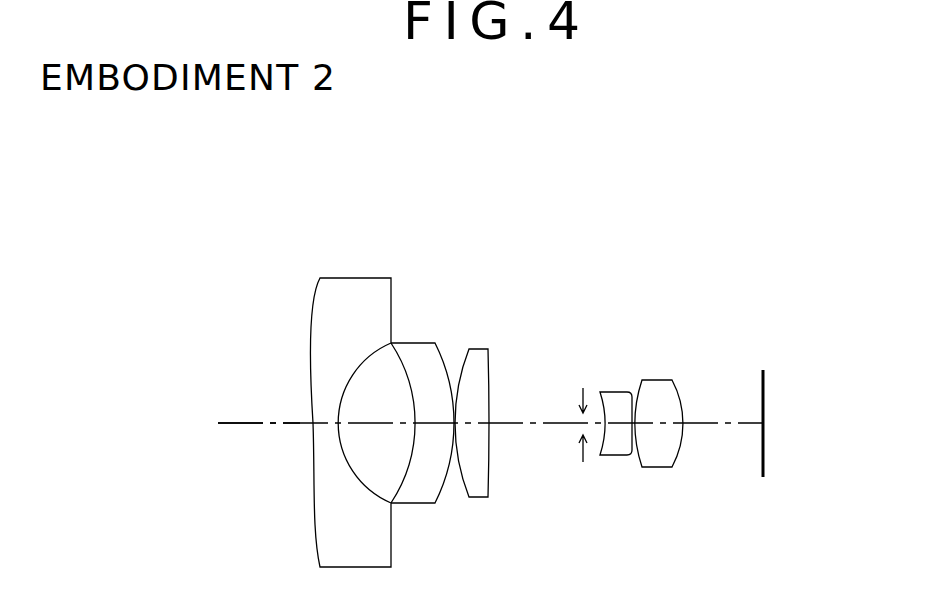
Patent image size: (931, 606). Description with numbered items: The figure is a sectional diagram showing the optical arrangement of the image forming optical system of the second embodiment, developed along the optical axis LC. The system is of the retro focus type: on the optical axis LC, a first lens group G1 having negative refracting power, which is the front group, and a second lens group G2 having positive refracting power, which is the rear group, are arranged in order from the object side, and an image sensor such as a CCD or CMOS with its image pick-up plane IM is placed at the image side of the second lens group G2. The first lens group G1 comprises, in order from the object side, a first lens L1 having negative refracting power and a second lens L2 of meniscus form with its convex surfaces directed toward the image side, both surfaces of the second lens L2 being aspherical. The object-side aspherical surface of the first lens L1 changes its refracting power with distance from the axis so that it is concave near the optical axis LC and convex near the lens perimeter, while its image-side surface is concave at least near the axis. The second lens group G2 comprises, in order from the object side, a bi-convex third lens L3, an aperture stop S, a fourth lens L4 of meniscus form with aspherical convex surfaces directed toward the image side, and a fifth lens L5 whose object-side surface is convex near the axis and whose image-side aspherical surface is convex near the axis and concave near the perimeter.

The optical axis LC is at (265, 423).
The first lens group G1 is at (458, 175).
The second lens group G2 is at (683, 175).
The first lens L1 is at (353, 318).
The second lens L2 is at (417, 352).
The third lens L3 is at (479, 355).
The aperture stop S is at (583, 388).
The fourth lens L4 is at (617, 397).
The fifth lens L5 is at (659, 387).
The image pick-up plane IM is at (762, 396).